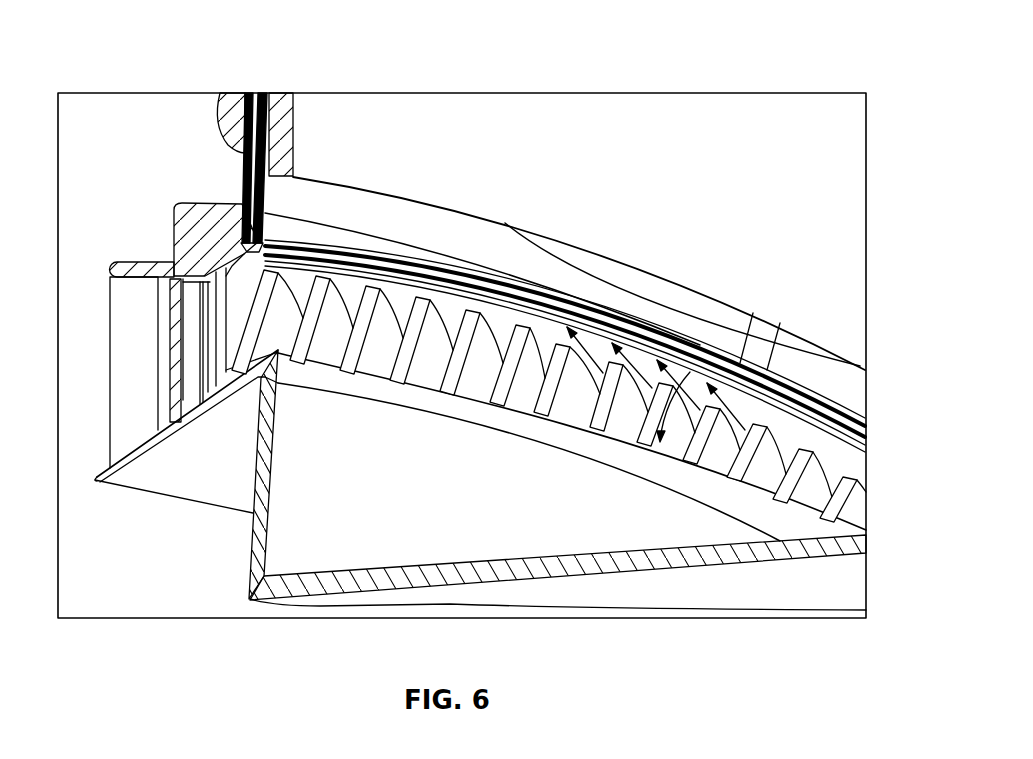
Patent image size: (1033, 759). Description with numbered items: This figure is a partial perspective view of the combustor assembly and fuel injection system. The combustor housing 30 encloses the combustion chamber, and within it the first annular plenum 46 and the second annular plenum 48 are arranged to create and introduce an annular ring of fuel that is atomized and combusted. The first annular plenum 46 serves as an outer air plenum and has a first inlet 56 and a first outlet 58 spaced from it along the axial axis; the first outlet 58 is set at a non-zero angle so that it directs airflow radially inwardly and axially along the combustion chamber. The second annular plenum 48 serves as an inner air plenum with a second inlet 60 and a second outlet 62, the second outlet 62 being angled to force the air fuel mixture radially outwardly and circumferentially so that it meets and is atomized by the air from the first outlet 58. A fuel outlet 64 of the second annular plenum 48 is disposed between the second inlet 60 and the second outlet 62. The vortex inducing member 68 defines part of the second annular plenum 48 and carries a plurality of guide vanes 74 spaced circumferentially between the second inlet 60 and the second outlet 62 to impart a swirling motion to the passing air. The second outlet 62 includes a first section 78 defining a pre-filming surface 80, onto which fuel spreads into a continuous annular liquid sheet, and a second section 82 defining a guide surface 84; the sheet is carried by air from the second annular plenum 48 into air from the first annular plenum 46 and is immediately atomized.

The combustor housing 30 is at (233, 110).
The first annular plenum 46 is at (197, 138).
The second annular plenum 48 is at (98, 323).
The first inlet 56 is at (202, 203).
The first outlet 58 is at (419, 207).
The second inlet 60 is at (108, 403).
The second outlet 62 is at (513, 378).
The fuel outlet 64 is at (268, 358).
The vortex inducing member 68 is at (150, 291).
The guide vanes 74 is at (484, 348).
The first section 78 is at (258, 472).
The pre-filming surface 80 is at (391, 282).
The second section 82 is at (708, 355).
The guide surface 84 is at (818, 502).